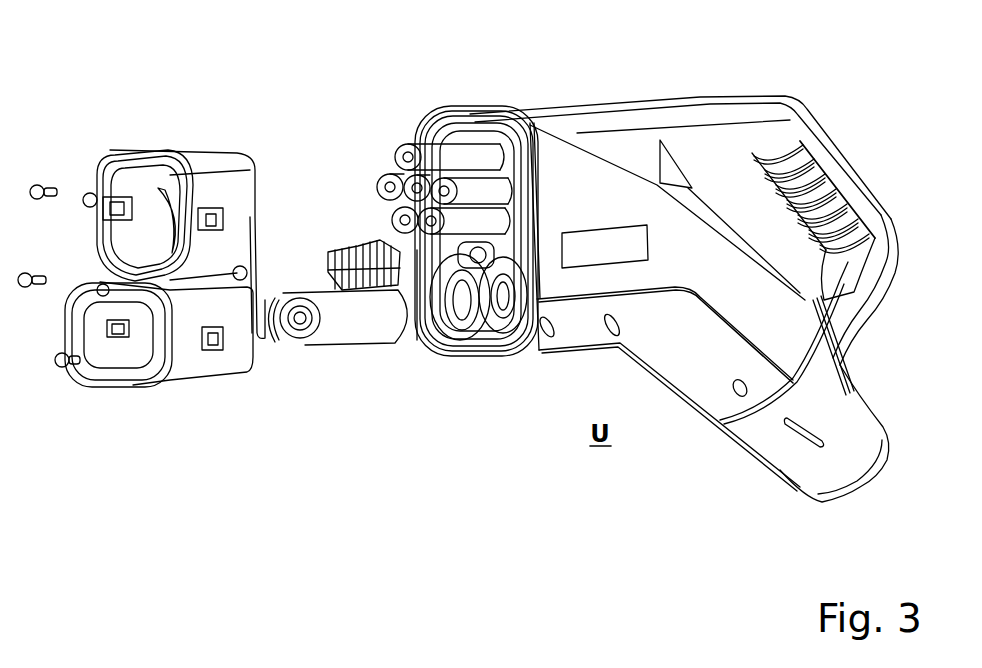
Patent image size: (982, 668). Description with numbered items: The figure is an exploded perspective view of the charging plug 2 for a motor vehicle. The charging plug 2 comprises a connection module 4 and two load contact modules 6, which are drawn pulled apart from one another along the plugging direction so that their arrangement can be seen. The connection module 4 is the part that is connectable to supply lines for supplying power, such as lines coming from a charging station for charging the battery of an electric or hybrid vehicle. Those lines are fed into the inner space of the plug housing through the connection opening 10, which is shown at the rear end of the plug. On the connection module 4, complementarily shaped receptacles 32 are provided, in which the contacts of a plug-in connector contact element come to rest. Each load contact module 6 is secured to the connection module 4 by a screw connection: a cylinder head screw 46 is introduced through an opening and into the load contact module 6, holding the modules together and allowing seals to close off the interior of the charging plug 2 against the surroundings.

The charging plug 2 is at (390, 73).
The connection module 4 is at (462, 328).
The load contact module 6 is at (282, 327).
The connection opening 10 is at (874, 477).
The receptacle 32 is at (483, 257).
The cylinder head screw 46 is at (420, 310).